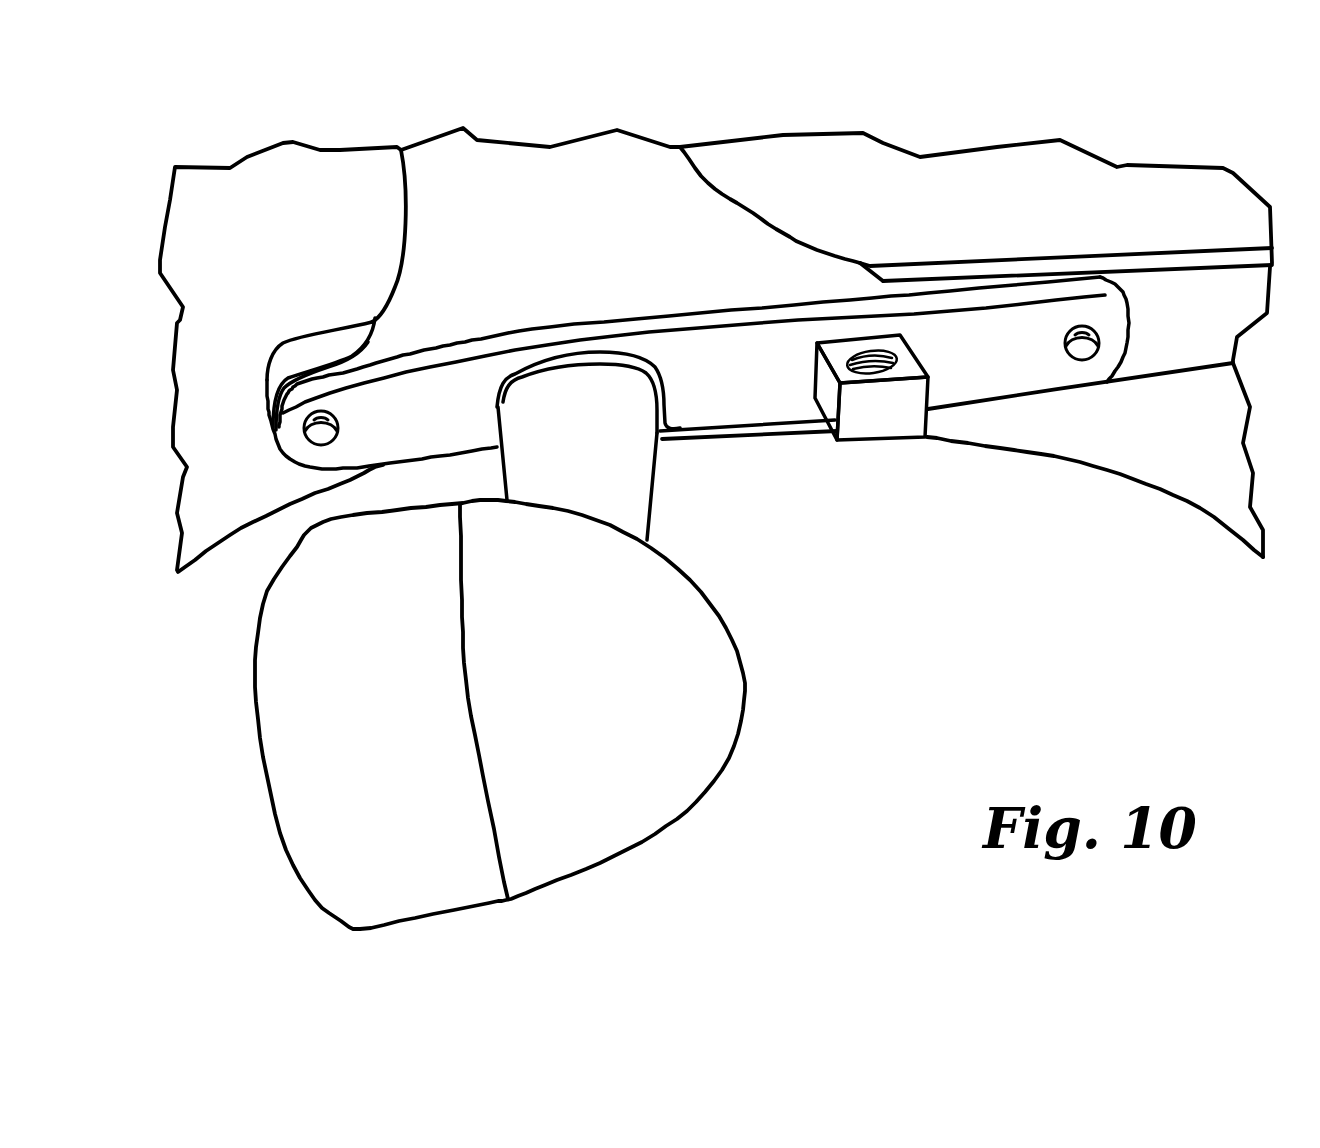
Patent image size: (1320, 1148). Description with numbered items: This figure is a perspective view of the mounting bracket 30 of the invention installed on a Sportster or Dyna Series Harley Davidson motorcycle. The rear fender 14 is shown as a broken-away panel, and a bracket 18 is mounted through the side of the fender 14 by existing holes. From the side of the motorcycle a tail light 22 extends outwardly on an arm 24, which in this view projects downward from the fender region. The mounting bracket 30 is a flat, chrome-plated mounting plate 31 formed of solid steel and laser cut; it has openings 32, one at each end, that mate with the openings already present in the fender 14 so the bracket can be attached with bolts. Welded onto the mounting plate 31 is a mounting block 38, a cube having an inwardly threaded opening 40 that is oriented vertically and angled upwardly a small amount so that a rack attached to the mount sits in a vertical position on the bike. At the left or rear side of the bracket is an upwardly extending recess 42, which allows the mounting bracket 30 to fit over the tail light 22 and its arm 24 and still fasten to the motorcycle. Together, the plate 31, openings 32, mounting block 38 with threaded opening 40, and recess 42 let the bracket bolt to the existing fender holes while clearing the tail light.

The rear fender 14 is at (843, 173).
The bracket 18 is at (258, 354).
The tail light 22 is at (656, 810).
The arm 24 is at (630, 503).
The mounting bracket 30 is at (777, 395).
The mounting plate 31 is at (733, 405).
The openings 32 is at (301, 428).
The mounting block 38 is at (893, 408).
The threaded opening 40 is at (900, 350).
The recess 42 is at (490, 397).